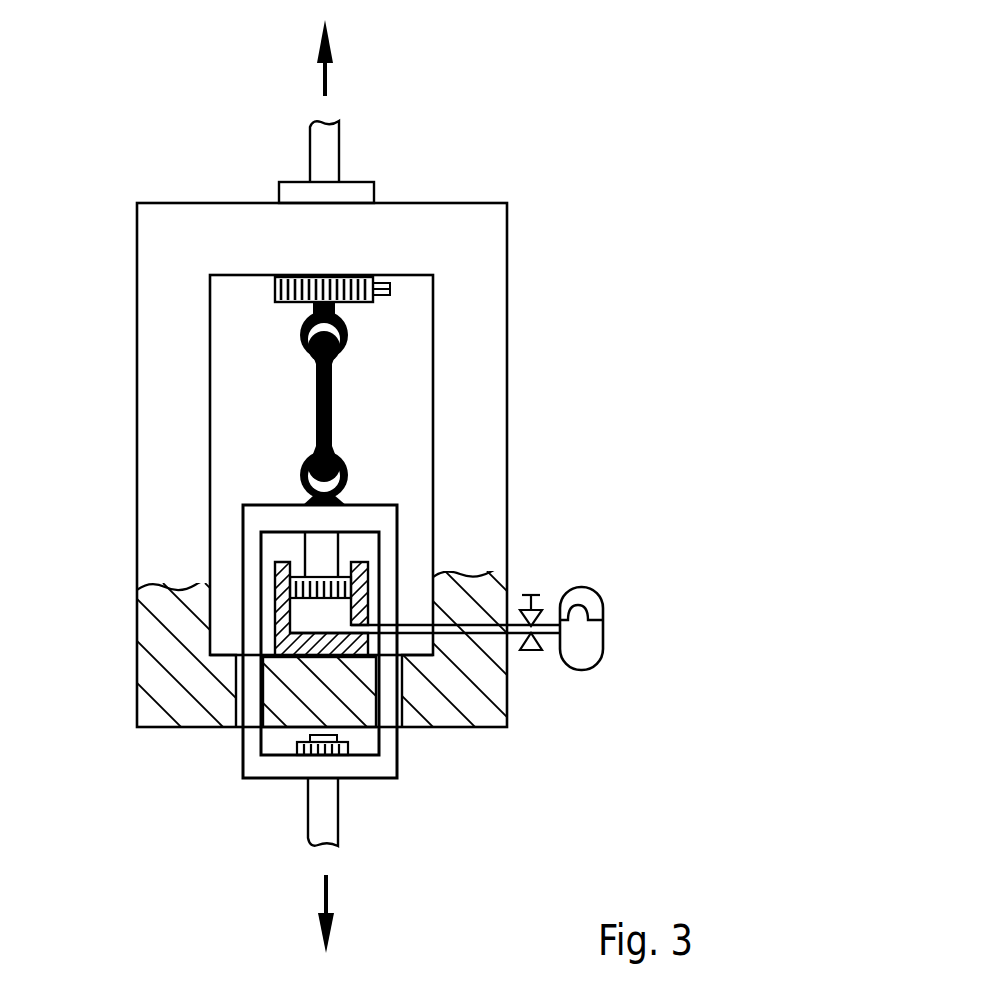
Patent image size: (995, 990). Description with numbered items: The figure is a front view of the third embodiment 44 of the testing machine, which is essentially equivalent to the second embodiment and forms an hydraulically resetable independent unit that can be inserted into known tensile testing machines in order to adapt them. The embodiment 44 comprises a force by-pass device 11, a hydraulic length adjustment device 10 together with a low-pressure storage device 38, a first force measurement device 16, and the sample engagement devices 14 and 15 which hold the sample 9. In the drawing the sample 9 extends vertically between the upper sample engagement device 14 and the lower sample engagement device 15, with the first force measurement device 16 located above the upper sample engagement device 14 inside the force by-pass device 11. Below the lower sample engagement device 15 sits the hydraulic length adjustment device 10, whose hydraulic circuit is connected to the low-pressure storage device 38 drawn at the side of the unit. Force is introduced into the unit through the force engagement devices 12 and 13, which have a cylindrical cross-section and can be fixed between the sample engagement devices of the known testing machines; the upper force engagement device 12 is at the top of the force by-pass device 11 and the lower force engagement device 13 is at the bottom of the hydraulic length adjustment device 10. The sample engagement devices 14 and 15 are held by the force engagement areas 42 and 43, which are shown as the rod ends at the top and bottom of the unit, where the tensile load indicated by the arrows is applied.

The sample 9 is at (333, 400).
The hydraulic length adjustment device 10 is at (238, 763).
The force by-pass device 11 is at (173, 500).
The force engagement device 12 is at (339, 166).
The force engagement device 13 is at (338, 800).
The sample engagement device 14 is at (348, 335).
The sample engagement device 15 is at (348, 482).
The first force measurement device 16 is at (390, 288).
The low-pressure storage device 38 is at (592, 633).
The force engagement area 42 is at (328, 140).
The force engagement area 43 is at (328, 823).
The embodiment 44 is at (543, 458).